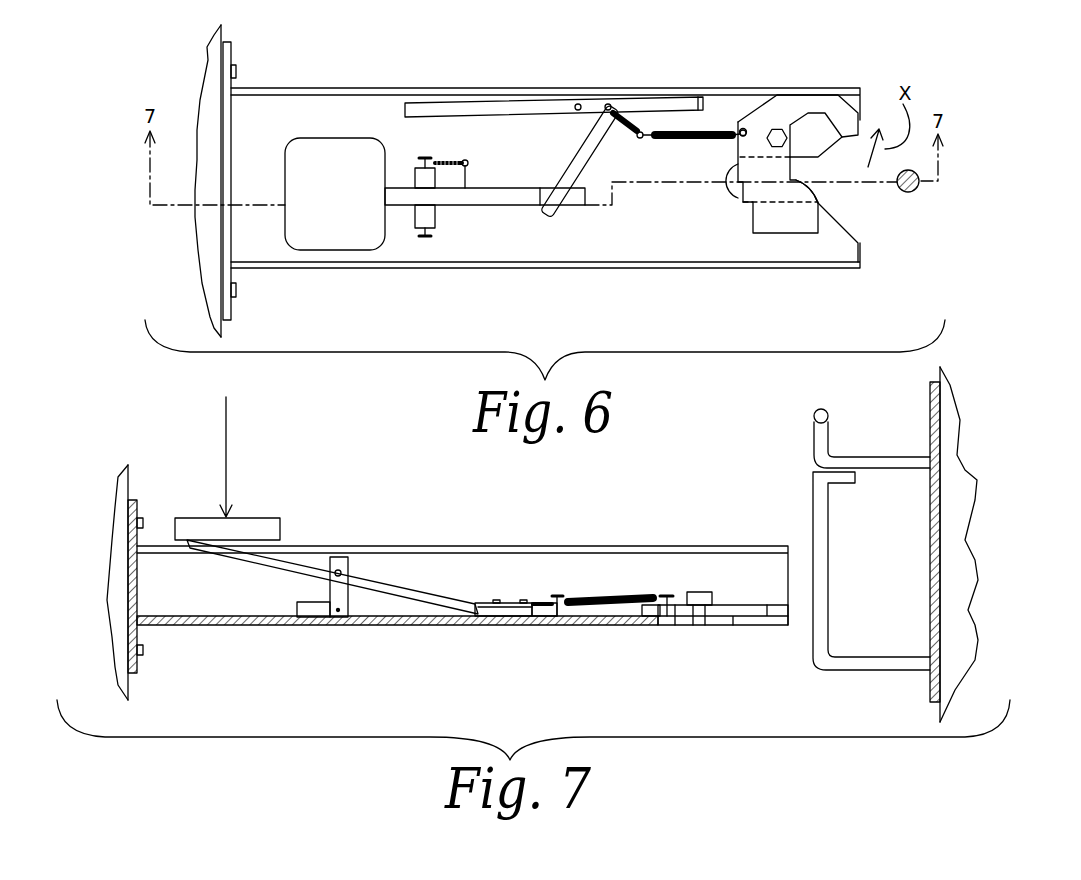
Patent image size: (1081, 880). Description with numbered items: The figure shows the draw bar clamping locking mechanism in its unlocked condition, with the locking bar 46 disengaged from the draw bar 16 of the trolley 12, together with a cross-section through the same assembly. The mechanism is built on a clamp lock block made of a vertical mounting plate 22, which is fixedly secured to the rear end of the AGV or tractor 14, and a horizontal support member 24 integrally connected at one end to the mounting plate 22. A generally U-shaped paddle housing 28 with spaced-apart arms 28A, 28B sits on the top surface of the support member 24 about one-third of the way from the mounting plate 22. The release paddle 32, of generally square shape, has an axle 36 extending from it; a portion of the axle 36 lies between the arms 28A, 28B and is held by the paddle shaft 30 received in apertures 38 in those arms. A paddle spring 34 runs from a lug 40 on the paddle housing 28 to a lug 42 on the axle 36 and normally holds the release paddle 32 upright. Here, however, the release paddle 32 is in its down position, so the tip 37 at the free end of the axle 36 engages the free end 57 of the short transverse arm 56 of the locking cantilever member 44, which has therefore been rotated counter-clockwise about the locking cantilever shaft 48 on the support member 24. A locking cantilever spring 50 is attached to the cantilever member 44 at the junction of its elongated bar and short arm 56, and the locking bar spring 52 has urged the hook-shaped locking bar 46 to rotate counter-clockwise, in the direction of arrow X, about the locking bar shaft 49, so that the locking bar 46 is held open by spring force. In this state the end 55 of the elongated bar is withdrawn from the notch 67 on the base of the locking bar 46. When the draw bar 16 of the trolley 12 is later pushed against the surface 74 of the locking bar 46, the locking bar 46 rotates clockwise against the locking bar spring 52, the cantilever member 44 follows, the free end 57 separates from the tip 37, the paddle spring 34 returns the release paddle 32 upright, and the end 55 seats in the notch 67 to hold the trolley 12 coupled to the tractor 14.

In FIG. 7, the trolley 12 is at (950, 450).
In FIG. 6, the AGV or tractor 14 is at (214, 79).
In FIG. 7, the AGV or tractor 14 is at (120, 533).
In FIG. 6, the draw bar 16 is at (920, 182).
In FIG. 7, the draw bar 16 is at (813, 417).
In FIG. 6, the vertical mounting plate 22 is at (231, 55).
In FIG. 7, the vertical mounting plate 22 is at (138, 502).
In FIG. 6, the horizontal support member 24 is at (272, 144).
In FIG. 7, the horizontal support member 24 is at (222, 623).
In FIG. 7, the paddle housing 28 is at (333, 587).
In FIG. 6, the arm of paddle housing 28A is at (430, 217).
In FIG. 6, the arm of paddle housing 28B is at (415, 167).
In FIG. 6, the paddle shaft 30 is at (423, 238).
In FIG. 6, the release paddle 32 is at (318, 186).
In FIG. 7, the release paddle 32 is at (263, 525).
In FIG. 6, the paddle spring 34 is at (447, 160).
In FIG. 6, the axle 36 is at (488, 200).
In FIG. 7, the axle 36 is at (375, 580).
In FIG. 6, the tip 37 is at (552, 187).
In FIG. 7, the tip 37 is at (483, 610).
In FIG. 7, the apertures 38 is at (353, 577).
In FIG. 6, the lug 40 is at (420, 158).
In FIG. 6, the lug 42 is at (468, 175).
In FIG. 6, the locking cantilever member 44 is at (472, 103).
In FIG. 6, the locking bar 46 is at (780, 105).
In FIG. 6, the locking cantilever shaft 48 is at (582, 107).
In FIG. 6, the locking bar shaft 49 is at (777, 133).
In FIG. 7, the locking bar shaft 49 is at (700, 590).
In FIG. 6, the locking cantilever spring 50 is at (627, 120).
In FIG. 7, the locking cantilever spring 50 is at (540, 600).
In FIG. 6, the locking bar spring 52 is at (677, 130).
In FIG. 7, the locking bar spring 52 is at (620, 597).
In FIG. 6, the end of elongated bar 55 is at (700, 103).
In FIG. 6, the short transverse arm 56 is at (565, 123).
In FIG. 6, the free end of short arm 57 is at (578, 176).
In FIG. 7, the free end of short arm 57 is at (512, 610).
In FIG. 6, the notch 67 is at (743, 202).
In FIG. 6, the surface 74 is at (793, 173).